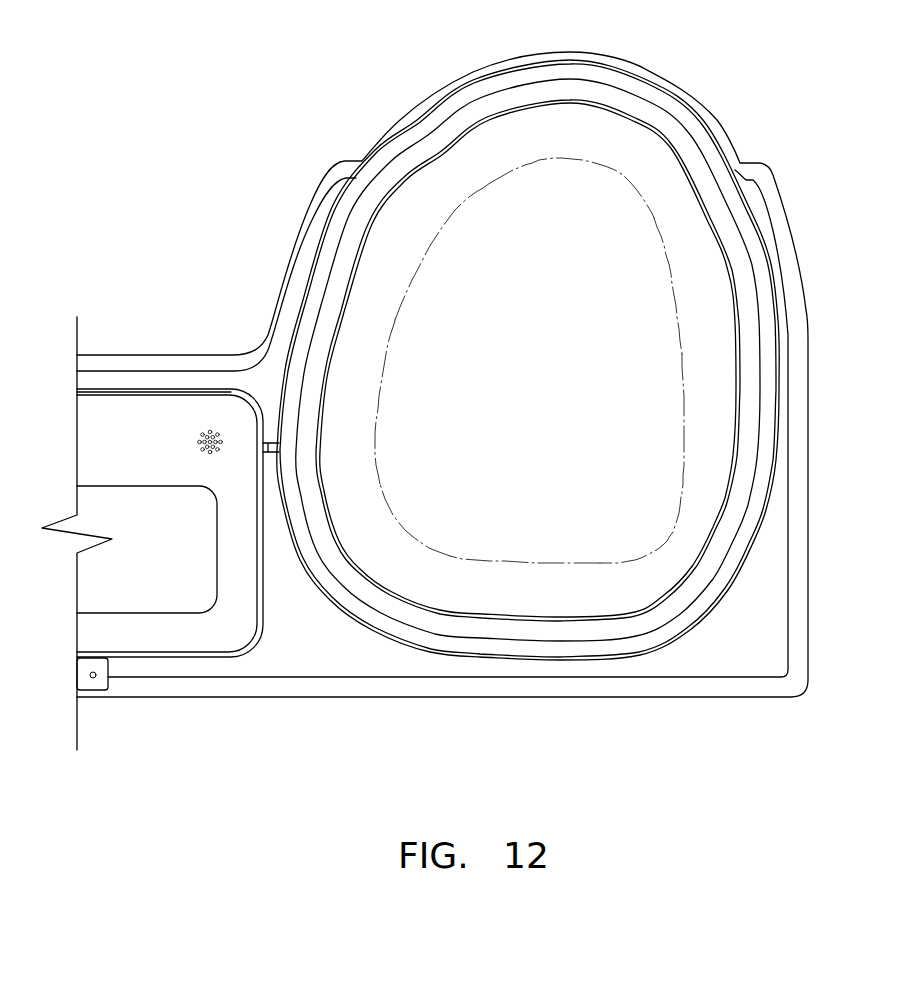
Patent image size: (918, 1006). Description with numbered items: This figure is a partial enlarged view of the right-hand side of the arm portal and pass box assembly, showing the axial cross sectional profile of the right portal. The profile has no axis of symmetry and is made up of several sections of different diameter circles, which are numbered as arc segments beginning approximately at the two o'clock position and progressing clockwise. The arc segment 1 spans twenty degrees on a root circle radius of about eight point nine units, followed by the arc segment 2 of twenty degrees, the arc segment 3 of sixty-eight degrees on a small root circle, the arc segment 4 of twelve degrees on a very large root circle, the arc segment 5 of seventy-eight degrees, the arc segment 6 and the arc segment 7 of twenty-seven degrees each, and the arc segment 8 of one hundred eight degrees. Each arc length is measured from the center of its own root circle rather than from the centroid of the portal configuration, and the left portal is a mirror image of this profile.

The arc segment 1 is at (700, 195).
The arc segment 2 is at (733, 350).
The arc segment 3 is at (720, 515).
The arc segment 4 is at (603, 610).
The arc segment 5 is at (443, 610).
The arc segment 6 is at (323, 488).
The arc segment 7 is at (345, 300).
The arc segment 8 is at (452, 145).